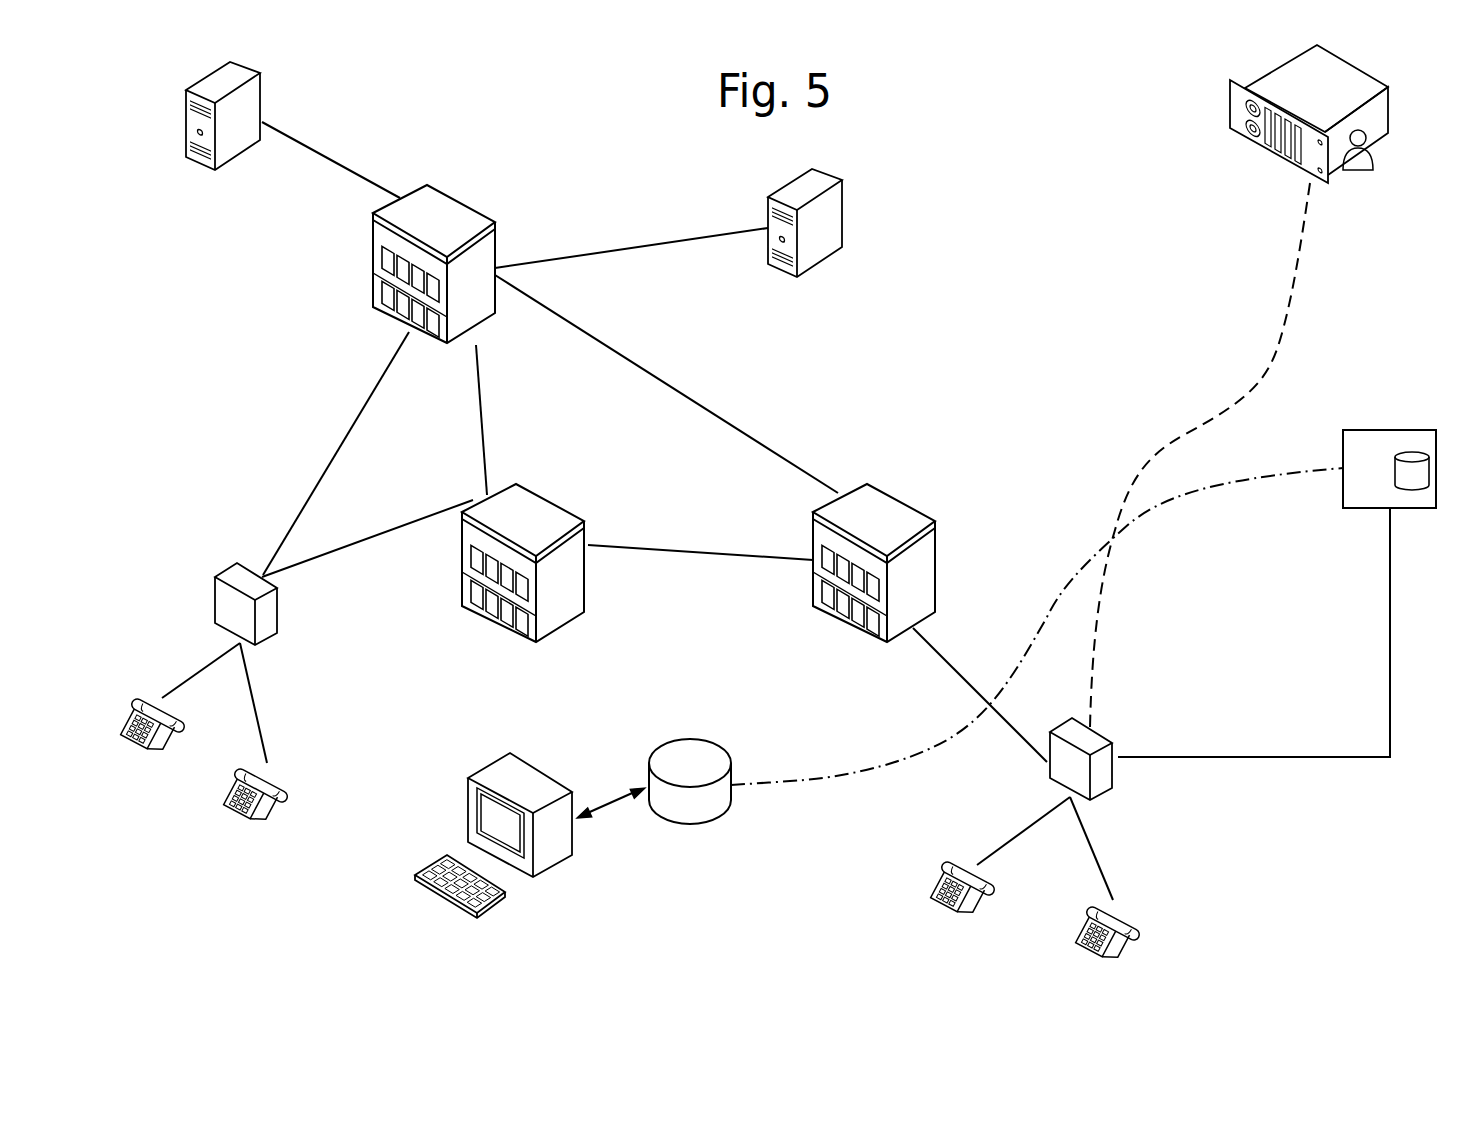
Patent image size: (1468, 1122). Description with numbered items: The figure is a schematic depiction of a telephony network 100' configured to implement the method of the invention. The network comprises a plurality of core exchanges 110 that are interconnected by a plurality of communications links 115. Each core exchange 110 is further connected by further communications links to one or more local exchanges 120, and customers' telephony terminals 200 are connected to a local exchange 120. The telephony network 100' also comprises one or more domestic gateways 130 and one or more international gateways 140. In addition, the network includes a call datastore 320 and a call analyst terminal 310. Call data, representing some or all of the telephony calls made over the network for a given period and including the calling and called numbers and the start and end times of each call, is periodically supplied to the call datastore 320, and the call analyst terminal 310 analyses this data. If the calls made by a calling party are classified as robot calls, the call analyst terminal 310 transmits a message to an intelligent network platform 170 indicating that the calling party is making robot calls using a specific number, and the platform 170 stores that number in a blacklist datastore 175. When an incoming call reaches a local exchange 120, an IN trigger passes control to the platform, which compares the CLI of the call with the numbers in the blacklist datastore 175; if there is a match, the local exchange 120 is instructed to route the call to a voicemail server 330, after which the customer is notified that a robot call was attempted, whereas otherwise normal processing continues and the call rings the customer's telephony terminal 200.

The telephony network 100' is at (767, 506).
The core exchange 110 is at (455, 220).
The communications links 115 is at (480, 428).
The local exchange 120 is at (1103, 776).
The domestic gateway 130 is at (237, 145).
The international gateway 140 is at (823, 248).
The intelligent network (IN) platform 170 is at (1370, 430).
The blacklist datastore 175 is at (1420, 483).
The telephony terminal 200 is at (162, 740).
The call analyst terminal 310 is at (448, 895).
The call datastore 320 is at (684, 810).
The voicemail server 330 is at (1262, 140).